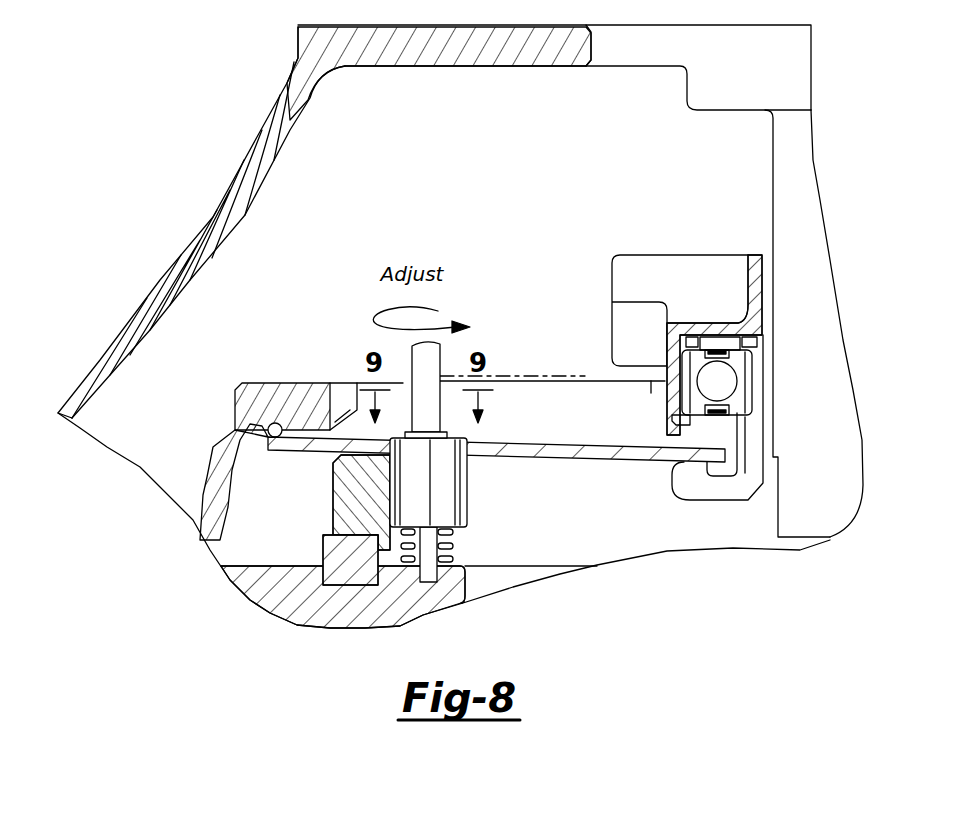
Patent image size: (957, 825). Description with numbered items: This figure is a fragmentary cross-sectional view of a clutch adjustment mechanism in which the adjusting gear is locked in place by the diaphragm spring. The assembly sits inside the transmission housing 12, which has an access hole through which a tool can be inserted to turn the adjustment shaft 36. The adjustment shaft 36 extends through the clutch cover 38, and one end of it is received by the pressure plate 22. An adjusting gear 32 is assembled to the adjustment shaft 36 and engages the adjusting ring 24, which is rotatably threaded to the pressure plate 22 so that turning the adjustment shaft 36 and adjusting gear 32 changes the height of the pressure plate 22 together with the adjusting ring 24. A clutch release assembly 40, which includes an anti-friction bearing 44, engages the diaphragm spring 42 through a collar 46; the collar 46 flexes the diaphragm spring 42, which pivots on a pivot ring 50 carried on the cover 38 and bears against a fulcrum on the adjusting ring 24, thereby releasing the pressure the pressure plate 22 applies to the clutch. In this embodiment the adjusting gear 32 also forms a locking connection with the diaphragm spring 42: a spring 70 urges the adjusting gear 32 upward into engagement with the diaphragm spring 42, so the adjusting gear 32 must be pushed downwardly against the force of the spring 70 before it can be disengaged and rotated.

The transmission housing 12 is at (214, 215).
The pressure plate 22 is at (463, 588).
The adjusting ring 24 is at (333, 492).
The adjusting gear 32 is at (467, 467).
The adjustment shaft 36 is at (438, 357).
The clutch cover 38 is at (240, 390).
The clutch release assembly 40 is at (660, 248).
The diaphragm spring 42 is at (627, 451).
The anti-friction bearing 44 is at (727, 383).
The collar 46 is at (683, 487).
The pivot ring 50 is at (268, 430).
The spring 70 is at (455, 540).